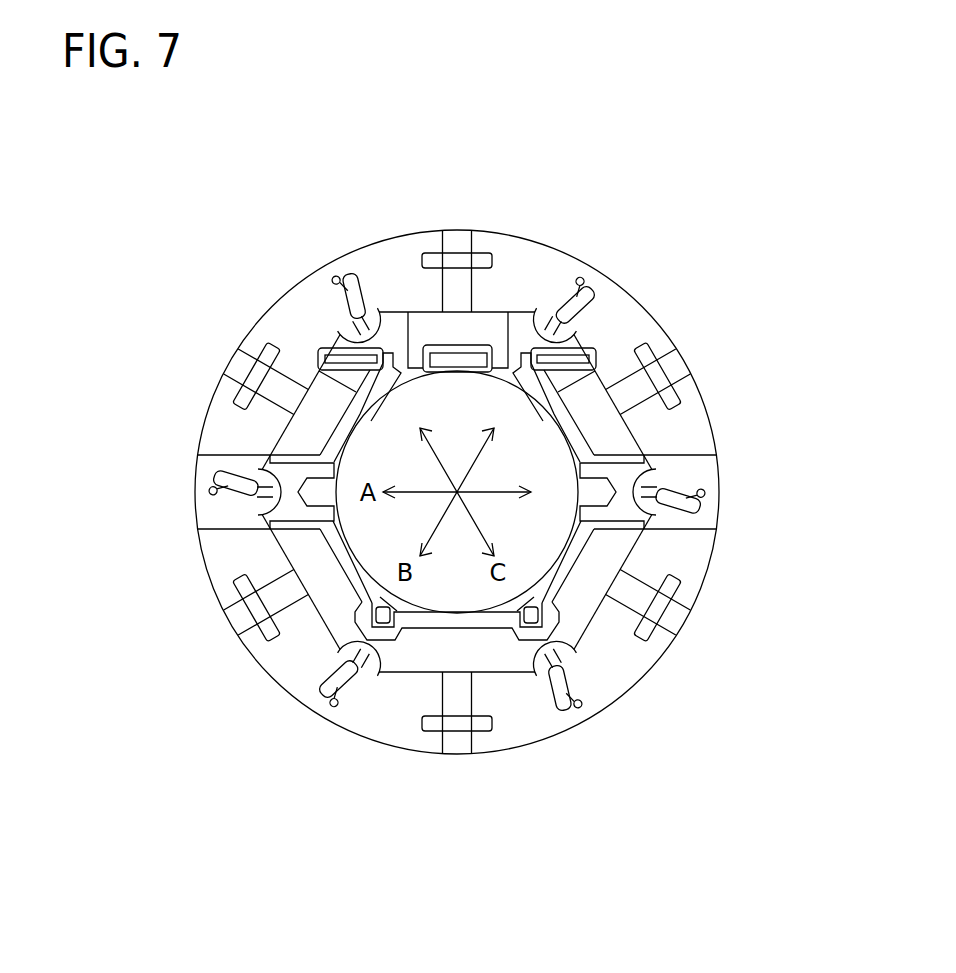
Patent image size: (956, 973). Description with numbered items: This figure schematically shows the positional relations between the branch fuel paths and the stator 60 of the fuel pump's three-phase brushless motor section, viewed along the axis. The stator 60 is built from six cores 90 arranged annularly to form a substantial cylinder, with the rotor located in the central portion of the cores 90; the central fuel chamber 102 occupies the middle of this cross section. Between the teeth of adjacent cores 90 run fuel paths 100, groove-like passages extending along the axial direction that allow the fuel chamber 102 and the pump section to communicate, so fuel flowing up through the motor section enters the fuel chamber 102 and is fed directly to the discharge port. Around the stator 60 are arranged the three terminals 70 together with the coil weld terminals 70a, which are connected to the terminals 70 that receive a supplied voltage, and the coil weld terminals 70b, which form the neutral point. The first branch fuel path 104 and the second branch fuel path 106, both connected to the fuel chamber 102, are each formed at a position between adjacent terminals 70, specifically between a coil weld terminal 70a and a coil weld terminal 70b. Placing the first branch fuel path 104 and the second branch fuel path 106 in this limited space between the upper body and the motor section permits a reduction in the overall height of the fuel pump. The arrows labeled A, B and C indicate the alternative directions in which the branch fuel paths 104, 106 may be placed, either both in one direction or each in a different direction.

The stator 60 is at (388, 208).
The terminal 70 is at (460, 345).
The coil weld terminal 70a is at (433, 258).
The coil weld terminal 70b is at (246, 600).
The core 90 is at (555, 237).
The fuel path 100 is at (385, 615).
The fuel chamber 102 is at (465, 428).
The first branch fuel path 104 is at (683, 469).
The second branch fuel path 106 is at (222, 508).